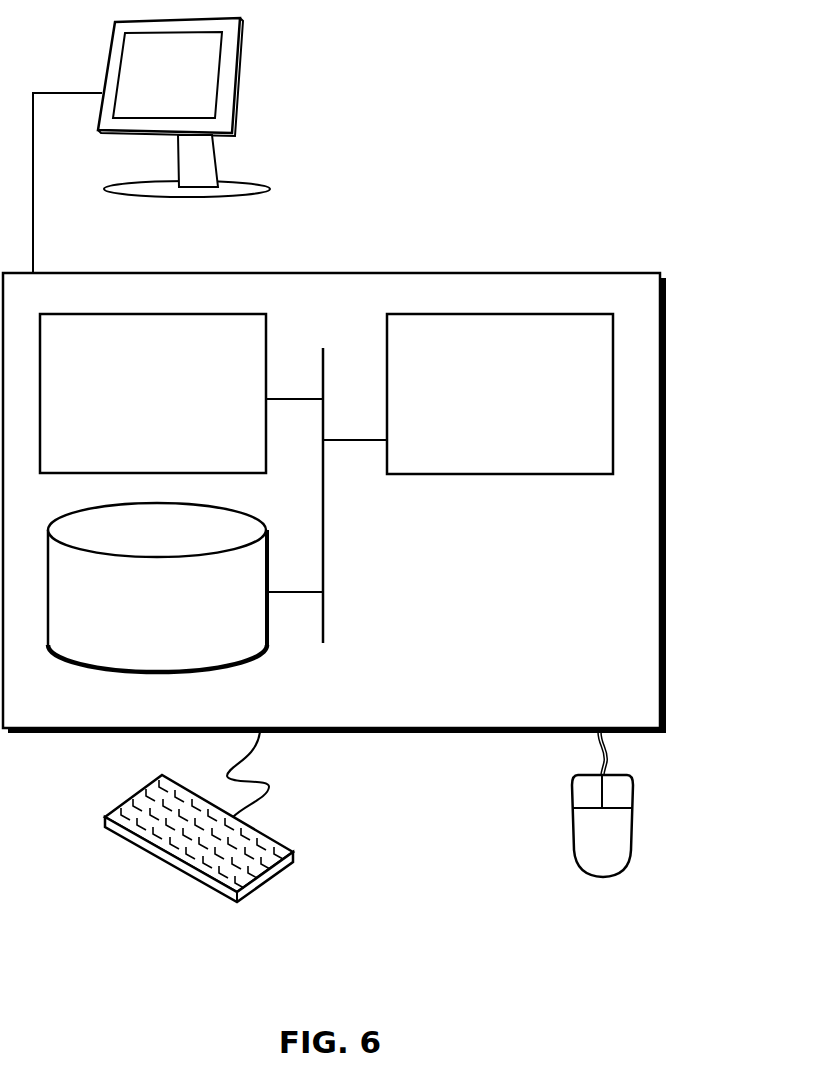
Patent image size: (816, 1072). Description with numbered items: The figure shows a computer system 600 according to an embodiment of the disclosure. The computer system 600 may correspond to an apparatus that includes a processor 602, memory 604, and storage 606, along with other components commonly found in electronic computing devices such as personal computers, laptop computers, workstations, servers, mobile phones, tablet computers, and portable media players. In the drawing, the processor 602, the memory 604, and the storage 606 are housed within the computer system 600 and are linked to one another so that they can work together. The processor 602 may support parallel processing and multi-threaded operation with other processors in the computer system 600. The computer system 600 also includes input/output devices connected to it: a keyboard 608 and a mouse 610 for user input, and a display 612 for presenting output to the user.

The computer system 600 is at (377, 250).
The processor 602 is at (482, 408).
The memory 604 is at (133, 406).
The storage 606 is at (139, 616).
The keyboard 608 is at (123, 837).
The mouse 610 is at (582, 847).
The display 612 is at (151, 145).